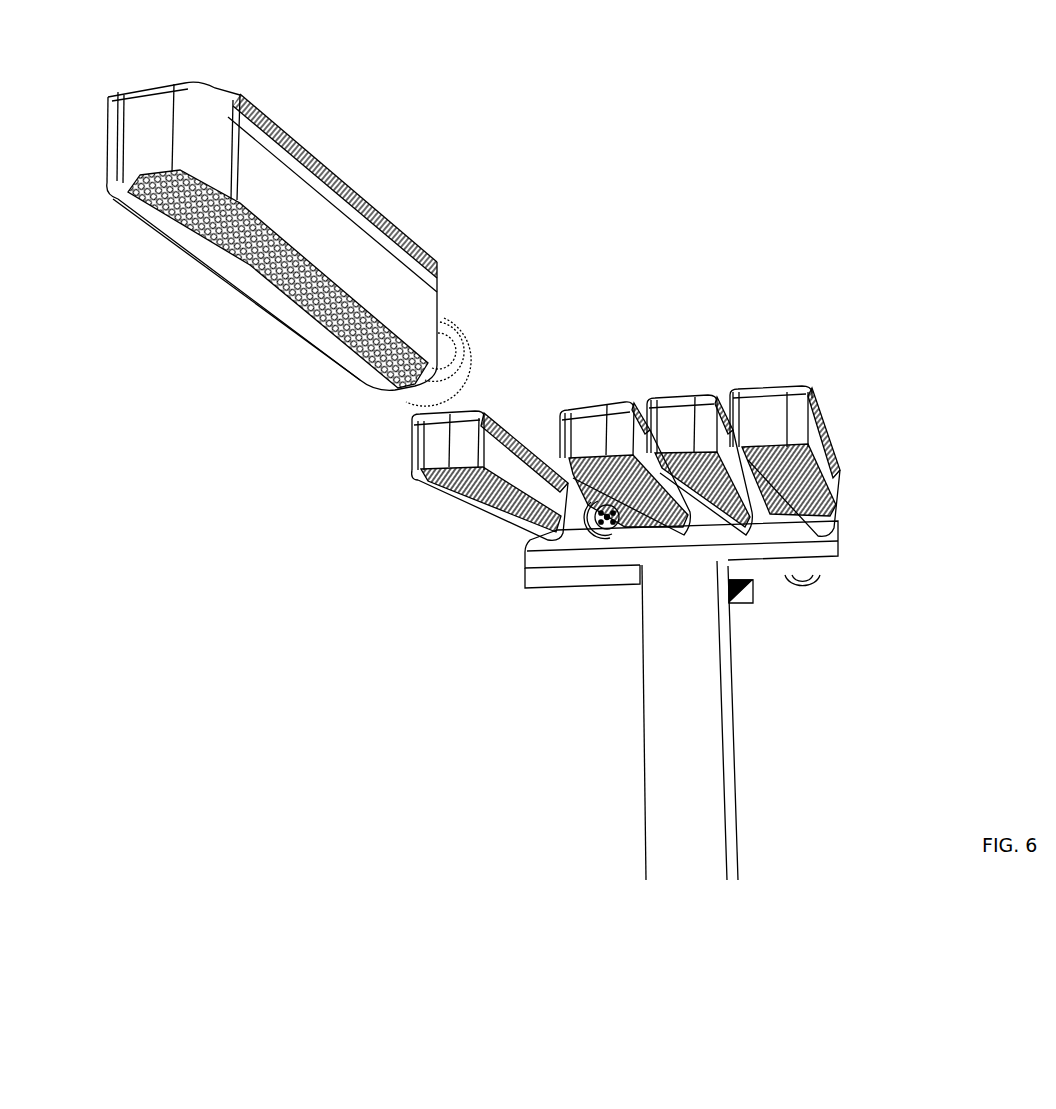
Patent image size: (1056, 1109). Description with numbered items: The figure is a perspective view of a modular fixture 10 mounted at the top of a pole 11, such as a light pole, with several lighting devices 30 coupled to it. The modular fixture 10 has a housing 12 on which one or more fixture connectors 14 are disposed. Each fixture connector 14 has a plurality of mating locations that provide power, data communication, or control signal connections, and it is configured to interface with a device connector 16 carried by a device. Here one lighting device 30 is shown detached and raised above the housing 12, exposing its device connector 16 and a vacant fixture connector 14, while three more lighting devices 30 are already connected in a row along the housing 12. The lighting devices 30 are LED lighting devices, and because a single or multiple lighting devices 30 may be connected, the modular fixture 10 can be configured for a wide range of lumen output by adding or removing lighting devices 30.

The modular fixture 10 is at (693, 252).
The pole 11 is at (733, 677).
The housing 12 is at (840, 551).
The fixture connector 14 is at (593, 530).
The device connector 16 is at (463, 339).
The lighting device 30 is at (368, 212).